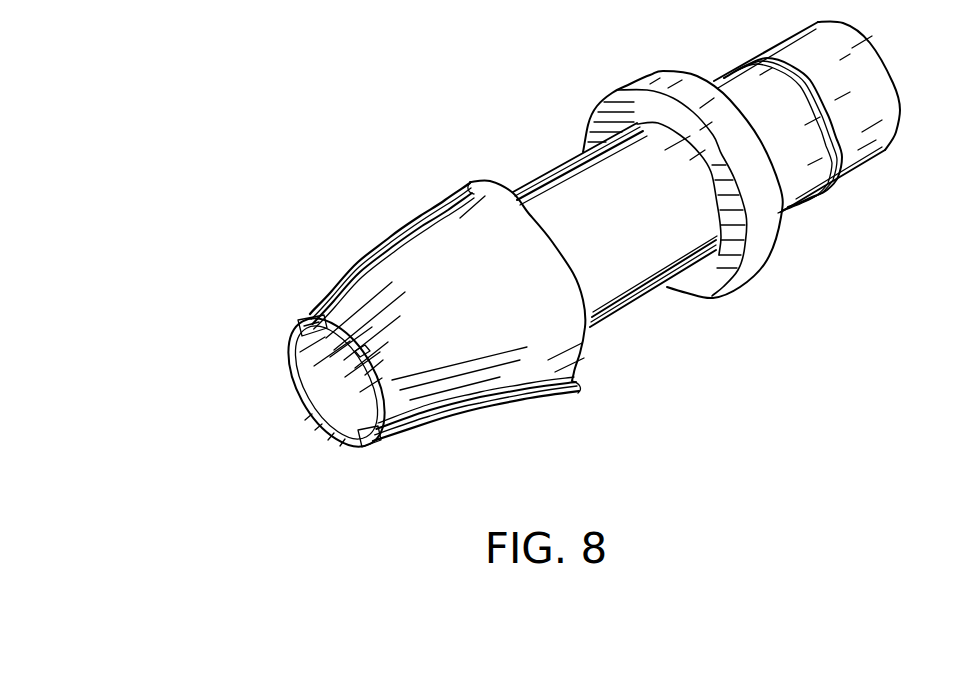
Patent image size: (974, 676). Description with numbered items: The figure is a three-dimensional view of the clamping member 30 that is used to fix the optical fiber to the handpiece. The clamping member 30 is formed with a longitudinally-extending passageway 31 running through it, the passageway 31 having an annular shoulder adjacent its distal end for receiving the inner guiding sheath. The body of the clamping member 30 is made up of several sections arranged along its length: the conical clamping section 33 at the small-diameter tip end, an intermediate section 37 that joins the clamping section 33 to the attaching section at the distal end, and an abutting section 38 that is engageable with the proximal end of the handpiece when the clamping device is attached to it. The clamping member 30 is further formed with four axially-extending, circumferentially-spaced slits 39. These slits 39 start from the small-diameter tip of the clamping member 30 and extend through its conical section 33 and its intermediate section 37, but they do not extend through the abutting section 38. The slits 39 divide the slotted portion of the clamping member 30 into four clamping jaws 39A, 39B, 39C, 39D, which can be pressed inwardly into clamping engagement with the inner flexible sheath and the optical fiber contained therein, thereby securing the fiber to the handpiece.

The clamping member 30 is at (543, 426).
The longitudinally-extending passageway 31 is at (337, 380).
The clamping section 33 is at (503, 243).
The intermediate section 37 is at (617, 307).
The abutting section 38 is at (763, 237).
The slits 39 is at (380, 270).
The clamping jaw 39A is at (360, 353).
The clamping jaw 39B is at (307, 321).
The clamping jaw 39C is at (292, 384).
The clamping jaw 39D is at (369, 444).